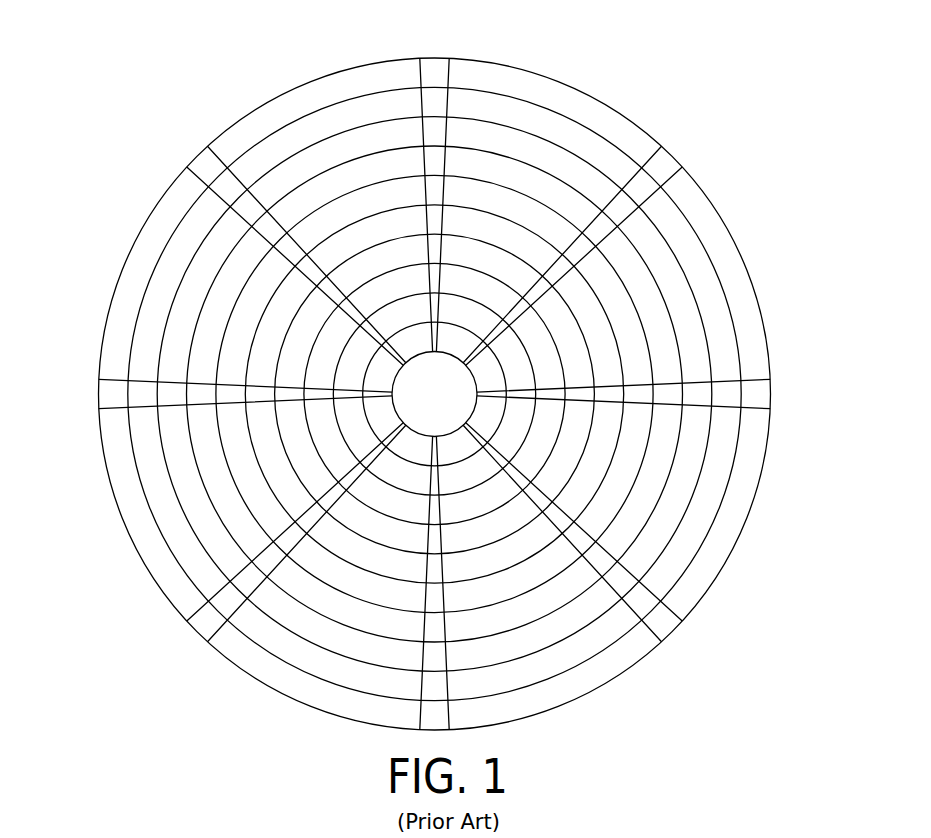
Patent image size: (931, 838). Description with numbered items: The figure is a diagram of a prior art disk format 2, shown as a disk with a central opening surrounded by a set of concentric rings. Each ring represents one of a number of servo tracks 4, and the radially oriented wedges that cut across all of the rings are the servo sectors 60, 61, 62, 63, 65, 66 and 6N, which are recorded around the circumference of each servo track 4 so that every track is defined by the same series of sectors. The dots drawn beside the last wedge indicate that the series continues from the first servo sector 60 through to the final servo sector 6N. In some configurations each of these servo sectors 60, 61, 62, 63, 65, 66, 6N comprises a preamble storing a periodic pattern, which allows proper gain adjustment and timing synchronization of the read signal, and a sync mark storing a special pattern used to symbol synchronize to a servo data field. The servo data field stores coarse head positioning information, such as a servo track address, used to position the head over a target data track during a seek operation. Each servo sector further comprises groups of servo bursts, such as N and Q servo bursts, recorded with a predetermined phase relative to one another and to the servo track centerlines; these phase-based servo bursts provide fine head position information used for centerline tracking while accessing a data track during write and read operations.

The disk format 2 is at (188, 64).
The servo track 4 is at (547, 125).
The servo sector 60 is at (434, 70).
The servo sector 61 is at (665, 161).
The servo sector 62 is at (775, 394).
The servo sector 63 is at (665, 626).
The servo sector 65 is at (202, 628).
The servo sector 66 is at (103, 394).
The servo sector 6N is at (205, 160).